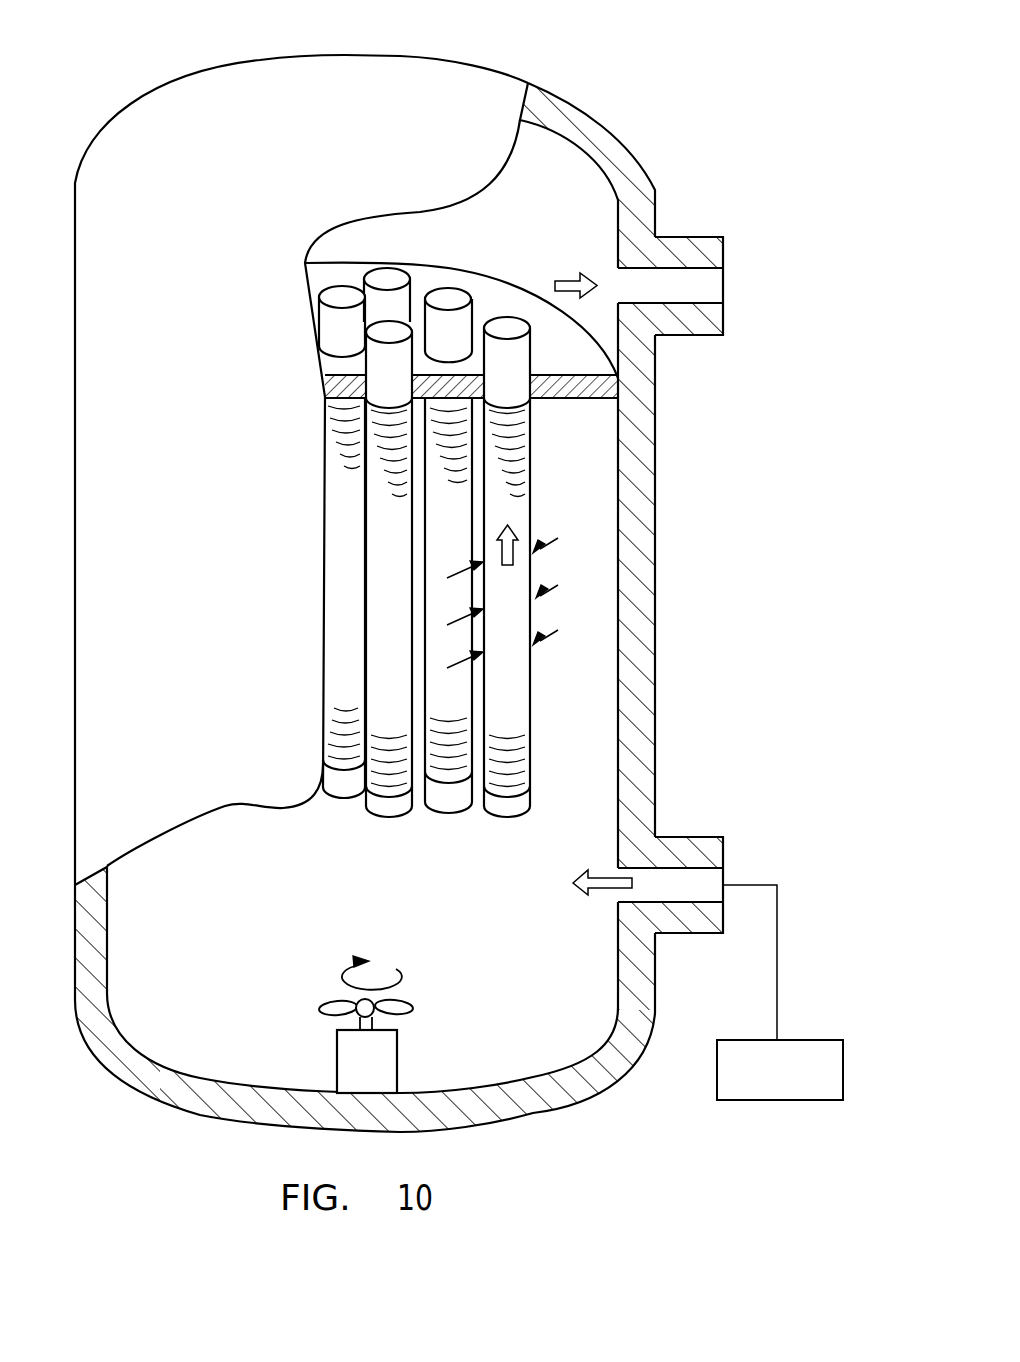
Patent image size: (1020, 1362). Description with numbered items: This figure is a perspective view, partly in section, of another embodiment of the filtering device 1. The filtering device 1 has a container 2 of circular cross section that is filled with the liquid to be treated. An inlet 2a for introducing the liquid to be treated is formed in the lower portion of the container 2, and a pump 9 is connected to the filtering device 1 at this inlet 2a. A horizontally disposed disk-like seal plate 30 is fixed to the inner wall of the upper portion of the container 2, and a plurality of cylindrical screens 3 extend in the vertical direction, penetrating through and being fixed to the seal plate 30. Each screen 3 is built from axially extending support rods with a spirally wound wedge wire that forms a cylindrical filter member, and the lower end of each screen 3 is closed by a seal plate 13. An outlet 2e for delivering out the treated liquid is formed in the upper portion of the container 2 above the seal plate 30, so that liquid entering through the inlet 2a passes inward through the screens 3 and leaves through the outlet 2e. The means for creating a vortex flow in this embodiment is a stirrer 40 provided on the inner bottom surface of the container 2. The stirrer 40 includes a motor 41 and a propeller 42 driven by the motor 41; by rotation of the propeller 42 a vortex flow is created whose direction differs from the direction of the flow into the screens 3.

The filtering device 1 is at (624, 104).
The container 2 is at (645, 540).
The inlet 2a is at (692, 848).
The outlet 2e is at (690, 292).
The screen 3 is at (393, 510).
The seal plate 13 is at (380, 811).
The seal plate 30 is at (557, 357).
The stirrer 40 is at (330, 1058).
The motor 41 is at (380, 1063).
The propeller 42 is at (402, 1002).
The pump 9 is at (810, 1040).